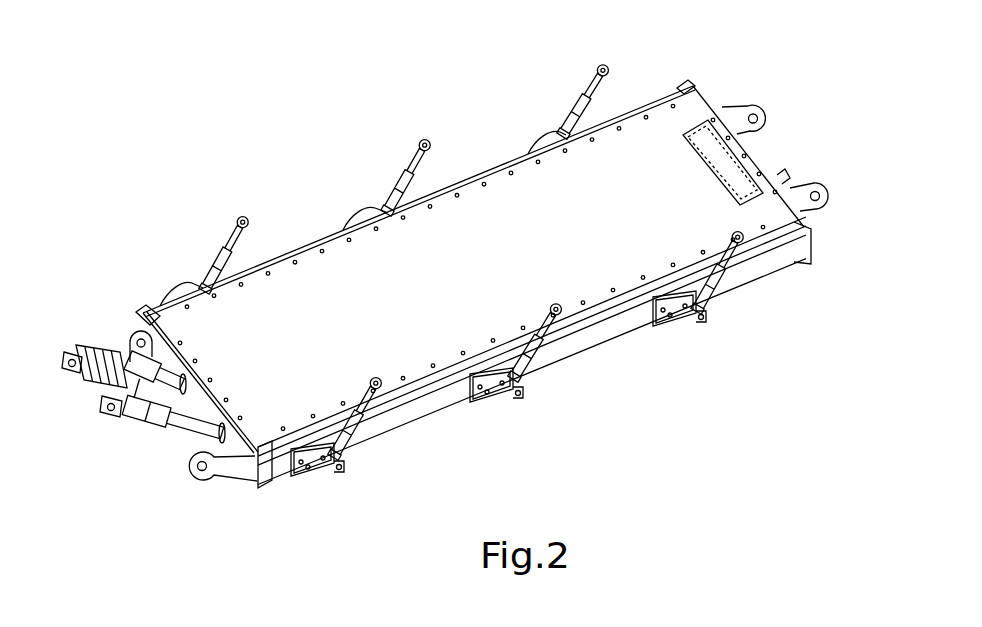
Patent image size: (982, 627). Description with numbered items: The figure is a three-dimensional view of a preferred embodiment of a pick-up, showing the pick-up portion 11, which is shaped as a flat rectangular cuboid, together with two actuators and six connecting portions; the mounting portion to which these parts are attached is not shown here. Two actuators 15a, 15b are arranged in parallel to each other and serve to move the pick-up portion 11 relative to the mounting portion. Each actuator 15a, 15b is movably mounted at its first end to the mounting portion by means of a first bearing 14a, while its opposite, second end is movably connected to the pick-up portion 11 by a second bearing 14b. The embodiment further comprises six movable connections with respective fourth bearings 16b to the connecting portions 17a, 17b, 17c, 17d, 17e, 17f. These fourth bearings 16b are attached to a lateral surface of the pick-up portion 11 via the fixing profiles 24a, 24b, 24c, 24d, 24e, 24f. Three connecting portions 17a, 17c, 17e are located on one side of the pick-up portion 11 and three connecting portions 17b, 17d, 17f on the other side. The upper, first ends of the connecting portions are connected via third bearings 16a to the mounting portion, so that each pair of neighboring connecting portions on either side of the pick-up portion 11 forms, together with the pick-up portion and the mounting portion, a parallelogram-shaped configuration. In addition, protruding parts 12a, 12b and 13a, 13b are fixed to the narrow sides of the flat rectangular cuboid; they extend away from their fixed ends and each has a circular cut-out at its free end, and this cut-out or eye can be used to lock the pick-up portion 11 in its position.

The pick-up portion 11 is at (609, 343).
The protruding part 12a is at (812, 188).
The protruding part 12b is at (772, 108).
The protruding part 13a is at (133, 355).
The protruding part 13b is at (213, 478).
The first bearing 14a is at (73, 373).
The second bearing 14b is at (184, 383).
The actuator 15a is at (167, 437).
The actuator 15b is at (95, 346).
The third bearing 16a is at (607, 66).
The fourth bearing 16b is at (343, 470).
The connecting portion 17a is at (363, 417).
The connecting portion 17b is at (217, 267).
The connecting portion 17c is at (537, 347).
The connecting portion 17d is at (403, 187).
The connecting portion 17e is at (713, 280).
The connecting portion 17f is at (582, 113).
The fixing profile 24a is at (308, 478).
The fixing profile 24b is at (493, 402).
The fixing profile 24c is at (677, 320).
The fixing profile 24d is at (180, 290).
The fixing profile 24e is at (363, 213).
The fixing profile 24f is at (536, 145).